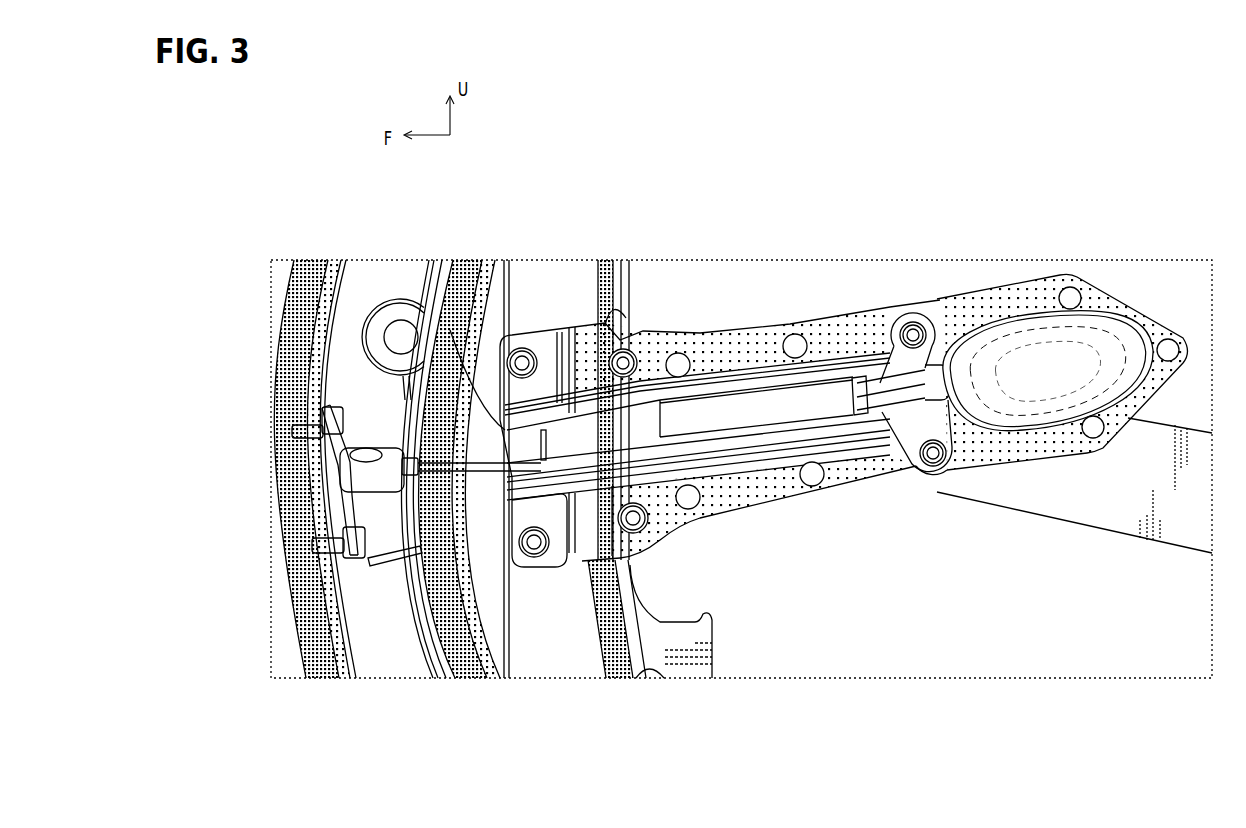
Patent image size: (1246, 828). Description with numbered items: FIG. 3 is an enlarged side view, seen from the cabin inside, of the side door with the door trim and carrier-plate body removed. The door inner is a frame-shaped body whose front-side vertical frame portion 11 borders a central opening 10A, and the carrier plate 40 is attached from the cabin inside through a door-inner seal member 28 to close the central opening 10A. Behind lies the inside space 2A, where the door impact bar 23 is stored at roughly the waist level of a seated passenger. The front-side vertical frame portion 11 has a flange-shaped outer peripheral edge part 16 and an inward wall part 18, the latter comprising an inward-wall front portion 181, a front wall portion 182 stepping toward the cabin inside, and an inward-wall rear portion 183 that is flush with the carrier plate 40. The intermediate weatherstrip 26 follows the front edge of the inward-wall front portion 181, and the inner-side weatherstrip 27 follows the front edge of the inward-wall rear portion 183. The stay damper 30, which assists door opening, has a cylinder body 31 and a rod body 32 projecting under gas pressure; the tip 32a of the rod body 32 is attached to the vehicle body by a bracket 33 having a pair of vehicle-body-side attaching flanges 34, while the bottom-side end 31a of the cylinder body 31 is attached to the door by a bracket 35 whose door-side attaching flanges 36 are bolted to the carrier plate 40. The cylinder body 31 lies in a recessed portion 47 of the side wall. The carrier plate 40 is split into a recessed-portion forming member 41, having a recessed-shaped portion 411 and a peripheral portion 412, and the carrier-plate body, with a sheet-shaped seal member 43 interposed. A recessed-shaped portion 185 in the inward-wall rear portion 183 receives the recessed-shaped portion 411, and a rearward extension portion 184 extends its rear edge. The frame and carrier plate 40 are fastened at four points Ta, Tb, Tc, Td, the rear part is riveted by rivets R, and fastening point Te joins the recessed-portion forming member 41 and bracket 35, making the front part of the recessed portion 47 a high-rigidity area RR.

The inside space 2A is at (1025, 659).
The central opening 10A is at (878, 608).
The front-side vertical frame portion 11 is at (383, 265).
The outer peripheral edge part 16 is at (283, 665).
The inward wall part 18 is at (424, 512).
The inward-wall front portion 181 is at (385, 665).
The front wall portion 182 is at (410, 650).
The inward-wall rear portion 183 is at (474, 482).
The rearward extension portion 184 is at (690, 512).
The recessed-shaped portion 185 is at (522, 548).
The door impact bar 23 is at (1160, 545).
The intermediate weatherstrip 26 is at (283, 578).
The inner-side weatherstrip 27 is at (450, 680).
The door-inner seal member 28 is at (655, 680).
The stay damper 30 is at (765, 392).
The cylinder body 31 is at (711, 424).
The bottom-side end 31a is at (970, 386).
The rod body 32 is at (485, 578).
The tip 32a is at (335, 478).
The bracket 33 is at (340, 462).
The vehicle-body-side attaching flanges 34 is at (300, 420).
The bracket 35 is at (962, 495).
The door-side attaching flanges 36 is at (959, 379).
The carrier plate 40 is at (764, 367).
The recessed-portion forming member 41 is at (764, 367).
The recessed-shaped portion 411 is at (452, 282).
The peripheral portion 412 is at (510, 282).
The sheet-shaped seal member 43 is at (1113, 310).
The recessed portion 47 is at (858, 500).
The rivets R is at (814, 489).
The high-rigidity area RR is at (648, 300).
The fastening point Ta is at (521, 347).
The fastening point Tb is at (652, 330).
The fastening point Tc is at (545, 558).
The fastening point Td is at (652, 530).
The fastening point Te is at (908, 312).